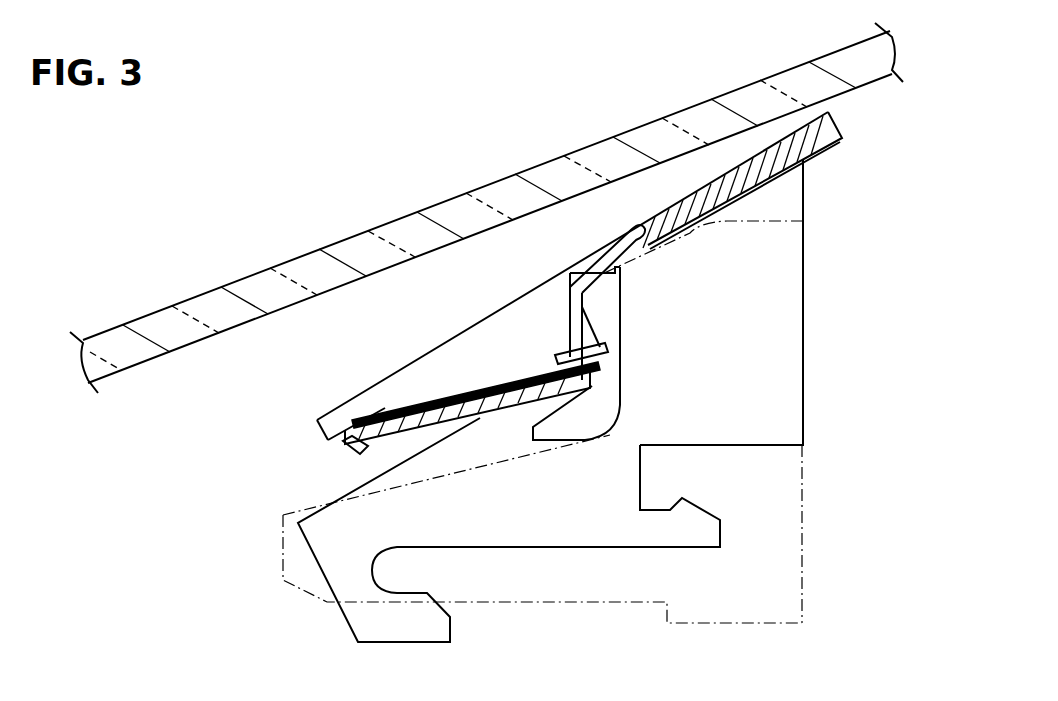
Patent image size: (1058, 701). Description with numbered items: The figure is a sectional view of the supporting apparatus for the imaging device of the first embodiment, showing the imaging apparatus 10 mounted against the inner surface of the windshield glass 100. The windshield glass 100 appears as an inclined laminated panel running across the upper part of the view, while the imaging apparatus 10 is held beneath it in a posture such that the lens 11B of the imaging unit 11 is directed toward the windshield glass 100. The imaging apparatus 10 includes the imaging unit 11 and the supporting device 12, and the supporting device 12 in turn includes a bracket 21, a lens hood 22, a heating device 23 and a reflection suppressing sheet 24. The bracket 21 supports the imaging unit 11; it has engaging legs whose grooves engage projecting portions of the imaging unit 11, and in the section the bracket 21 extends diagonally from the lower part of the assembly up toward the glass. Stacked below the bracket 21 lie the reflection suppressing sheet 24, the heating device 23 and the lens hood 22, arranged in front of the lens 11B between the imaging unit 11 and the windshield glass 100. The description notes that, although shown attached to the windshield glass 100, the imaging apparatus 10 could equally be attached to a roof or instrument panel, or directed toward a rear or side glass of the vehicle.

The windshield glass 100 is at (438, 204).
The imaging apparatus 10 is at (850, 168).
The imaging unit 11 is at (803, 503).
The lens 11B is at (562, 274).
The supporting device 12 is at (804, 201).
The bracket 21 is at (318, 417).
The lens hood 22 is at (347, 441).
The heating device 23 is at (397, 403).
The reflection suppressing sheet 24 is at (453, 387).